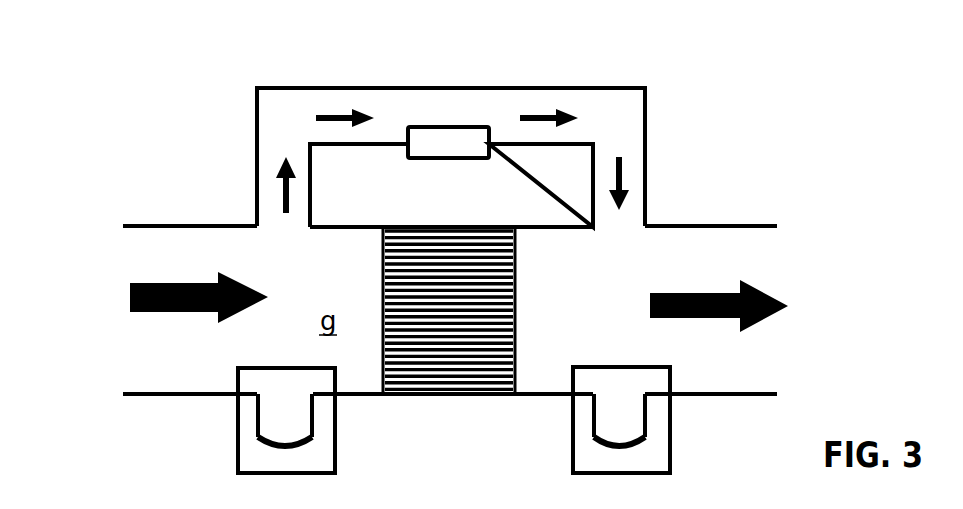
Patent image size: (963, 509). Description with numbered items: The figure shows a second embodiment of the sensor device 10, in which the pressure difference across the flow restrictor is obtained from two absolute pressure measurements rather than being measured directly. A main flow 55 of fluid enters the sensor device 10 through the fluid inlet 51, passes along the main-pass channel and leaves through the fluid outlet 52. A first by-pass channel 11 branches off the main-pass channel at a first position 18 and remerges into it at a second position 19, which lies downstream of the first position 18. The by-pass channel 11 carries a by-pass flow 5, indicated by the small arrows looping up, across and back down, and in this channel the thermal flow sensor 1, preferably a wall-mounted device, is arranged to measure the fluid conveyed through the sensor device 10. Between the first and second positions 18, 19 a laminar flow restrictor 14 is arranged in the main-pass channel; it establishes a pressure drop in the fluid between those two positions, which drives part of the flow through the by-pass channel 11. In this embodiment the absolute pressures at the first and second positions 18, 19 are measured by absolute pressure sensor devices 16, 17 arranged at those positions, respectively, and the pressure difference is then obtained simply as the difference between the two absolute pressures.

The thermal flow sensor 1 is at (422, 140).
The by-pass flow 5 is at (623, 180).
The sensor device 10 is at (166, 181).
The first by-pass channel 11 is at (279, 117).
The laminar flow restrictor 14 is at (403, 300).
The absolute pressure sensor device 16 is at (252, 450).
The absolute pressure sensor device 17 is at (593, 450).
The first position 18 is at (292, 298).
The second position 19 is at (612, 303).
The fluid inlet 51 is at (137, 358).
The fluid outlet 52 is at (758, 353).
The main flow 55 is at (153, 283).